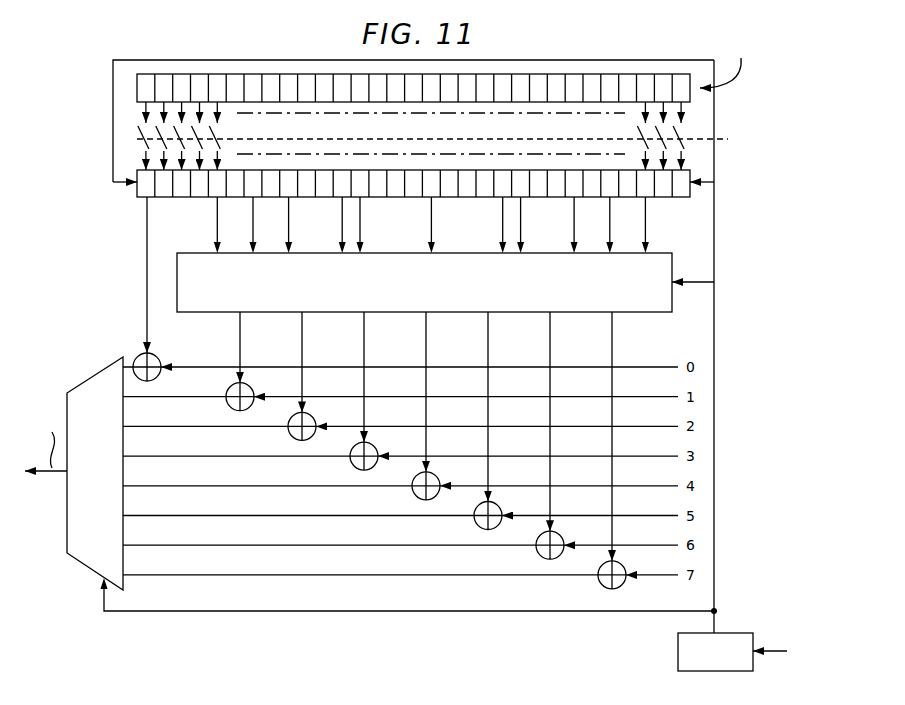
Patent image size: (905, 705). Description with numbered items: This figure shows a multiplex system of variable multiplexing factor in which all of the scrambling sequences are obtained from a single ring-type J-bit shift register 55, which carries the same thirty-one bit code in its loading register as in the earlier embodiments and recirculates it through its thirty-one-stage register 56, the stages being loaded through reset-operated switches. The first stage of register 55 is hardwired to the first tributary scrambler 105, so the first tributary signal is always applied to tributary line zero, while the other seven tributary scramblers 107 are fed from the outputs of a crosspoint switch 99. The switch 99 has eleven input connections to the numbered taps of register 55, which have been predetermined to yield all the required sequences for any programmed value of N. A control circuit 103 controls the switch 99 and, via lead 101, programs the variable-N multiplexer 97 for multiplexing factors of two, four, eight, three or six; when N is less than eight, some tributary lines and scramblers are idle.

The J-bit shift register 55 is at (113, 134).
The 31-stage register 56 is at (690, 206).
The crosspoint switch 99 is at (673, 262).
The first tributary scrambler 105 is at (161, 357).
The tributary scramblers 107 is at (229, 407).
The variable-N multiplexer 97 is at (92, 571).
The lead 101 is at (715, 478).
The control circuit 103 is at (738, 632).